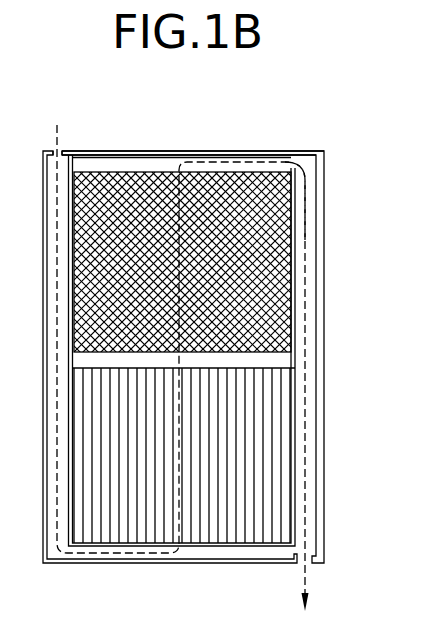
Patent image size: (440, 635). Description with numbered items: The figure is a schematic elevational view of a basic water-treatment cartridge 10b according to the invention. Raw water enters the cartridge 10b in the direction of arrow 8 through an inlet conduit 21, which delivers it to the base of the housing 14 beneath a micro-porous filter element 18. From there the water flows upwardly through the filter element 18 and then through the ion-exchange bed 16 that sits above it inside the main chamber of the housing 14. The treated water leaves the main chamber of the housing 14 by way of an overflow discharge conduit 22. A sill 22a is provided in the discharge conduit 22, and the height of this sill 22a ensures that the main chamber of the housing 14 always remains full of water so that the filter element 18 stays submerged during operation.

The arrow 8 is at (53, 150).
The cartridge 10b is at (250, 148).
The housing 14 is at (299, 149).
The ion-exchange bed 16 is at (84, 228).
The micro-porous filter element 18 is at (96, 392).
The inlet conduit 21 is at (68, 150).
The overflow discharge conduit 22 is at (318, 172).
The sill 22a is at (306, 183).